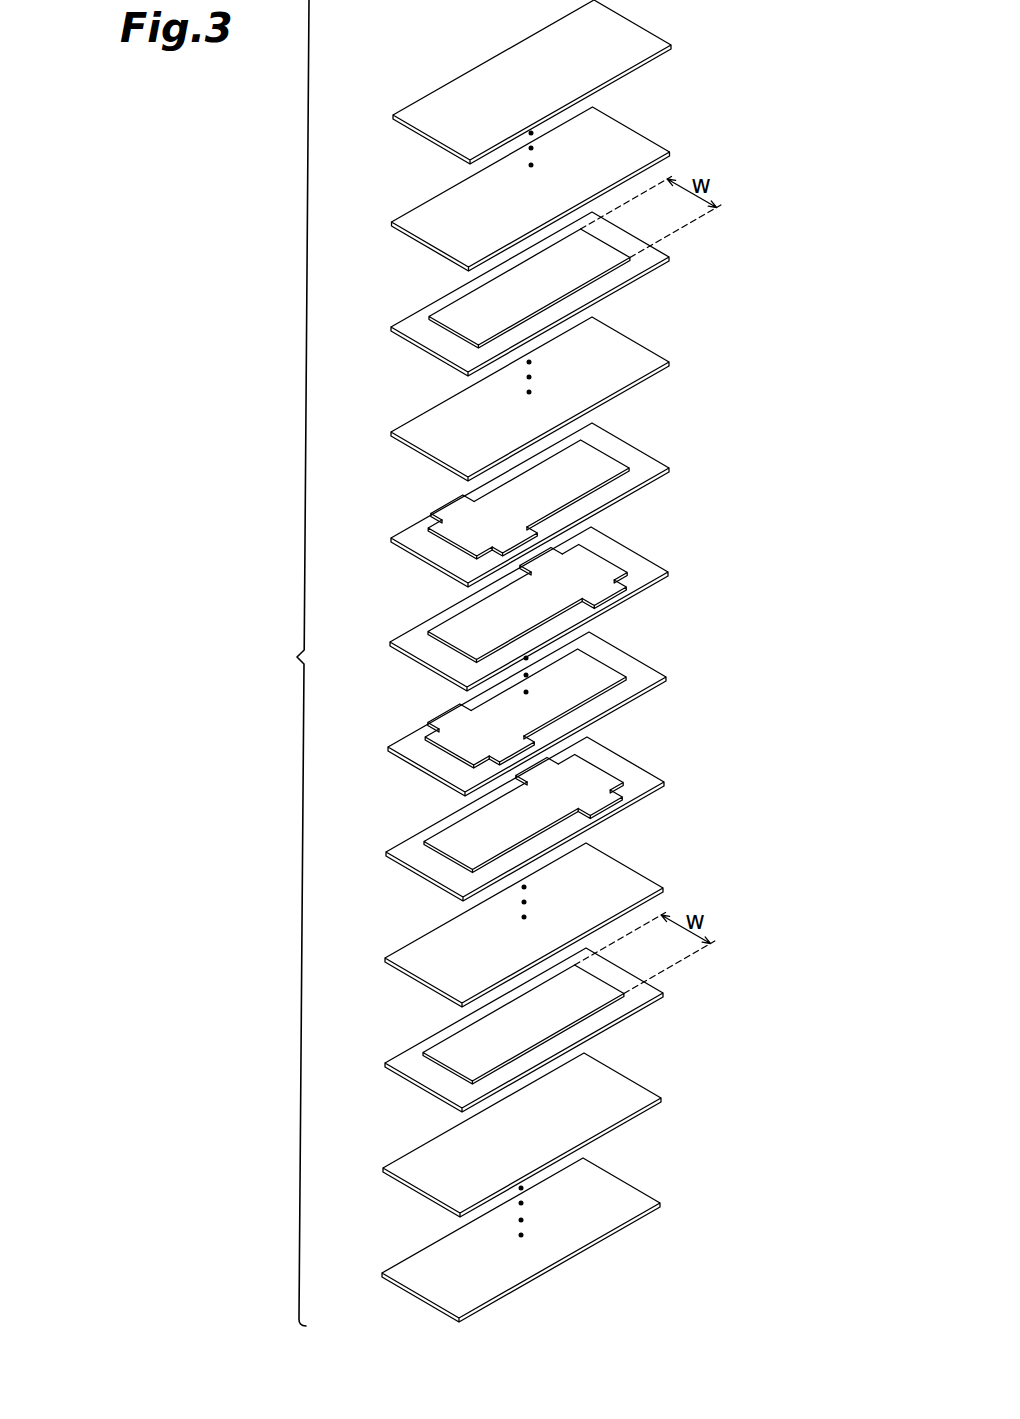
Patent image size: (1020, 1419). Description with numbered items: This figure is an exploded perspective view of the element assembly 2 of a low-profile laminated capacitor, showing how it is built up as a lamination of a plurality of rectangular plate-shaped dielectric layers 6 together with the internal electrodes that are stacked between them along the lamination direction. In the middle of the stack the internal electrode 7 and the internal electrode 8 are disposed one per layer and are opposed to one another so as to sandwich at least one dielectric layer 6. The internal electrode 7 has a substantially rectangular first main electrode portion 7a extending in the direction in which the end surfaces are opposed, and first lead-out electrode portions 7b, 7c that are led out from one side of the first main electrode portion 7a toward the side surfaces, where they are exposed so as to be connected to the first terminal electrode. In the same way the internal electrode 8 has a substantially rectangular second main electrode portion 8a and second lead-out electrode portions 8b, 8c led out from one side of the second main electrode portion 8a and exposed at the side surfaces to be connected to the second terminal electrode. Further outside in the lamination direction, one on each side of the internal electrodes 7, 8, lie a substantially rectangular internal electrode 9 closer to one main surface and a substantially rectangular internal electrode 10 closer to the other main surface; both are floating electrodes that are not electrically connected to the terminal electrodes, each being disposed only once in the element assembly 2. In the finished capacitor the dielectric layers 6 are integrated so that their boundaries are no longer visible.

The element assembly 2 is at (292, 663).
The dielectric layer 6 is at (644, 45).
The internal electrode 7 is at (519, 588).
The first main electrode portion 7a is at (542, 492).
The first lead-out electrode portion 7b is at (448, 505).
The first lead-out electrode portion 7c is at (513, 545).
The internal electrode 8 is at (516, 688).
The second main electrode portion 8a is at (517, 607).
The second lead-out electrode portion 8b is at (553, 556).
The second lead-out electrode portion 8c is at (607, 592).
The internal electrode 9 is at (453, 315).
The internal electrode 10 is at (448, 1048).